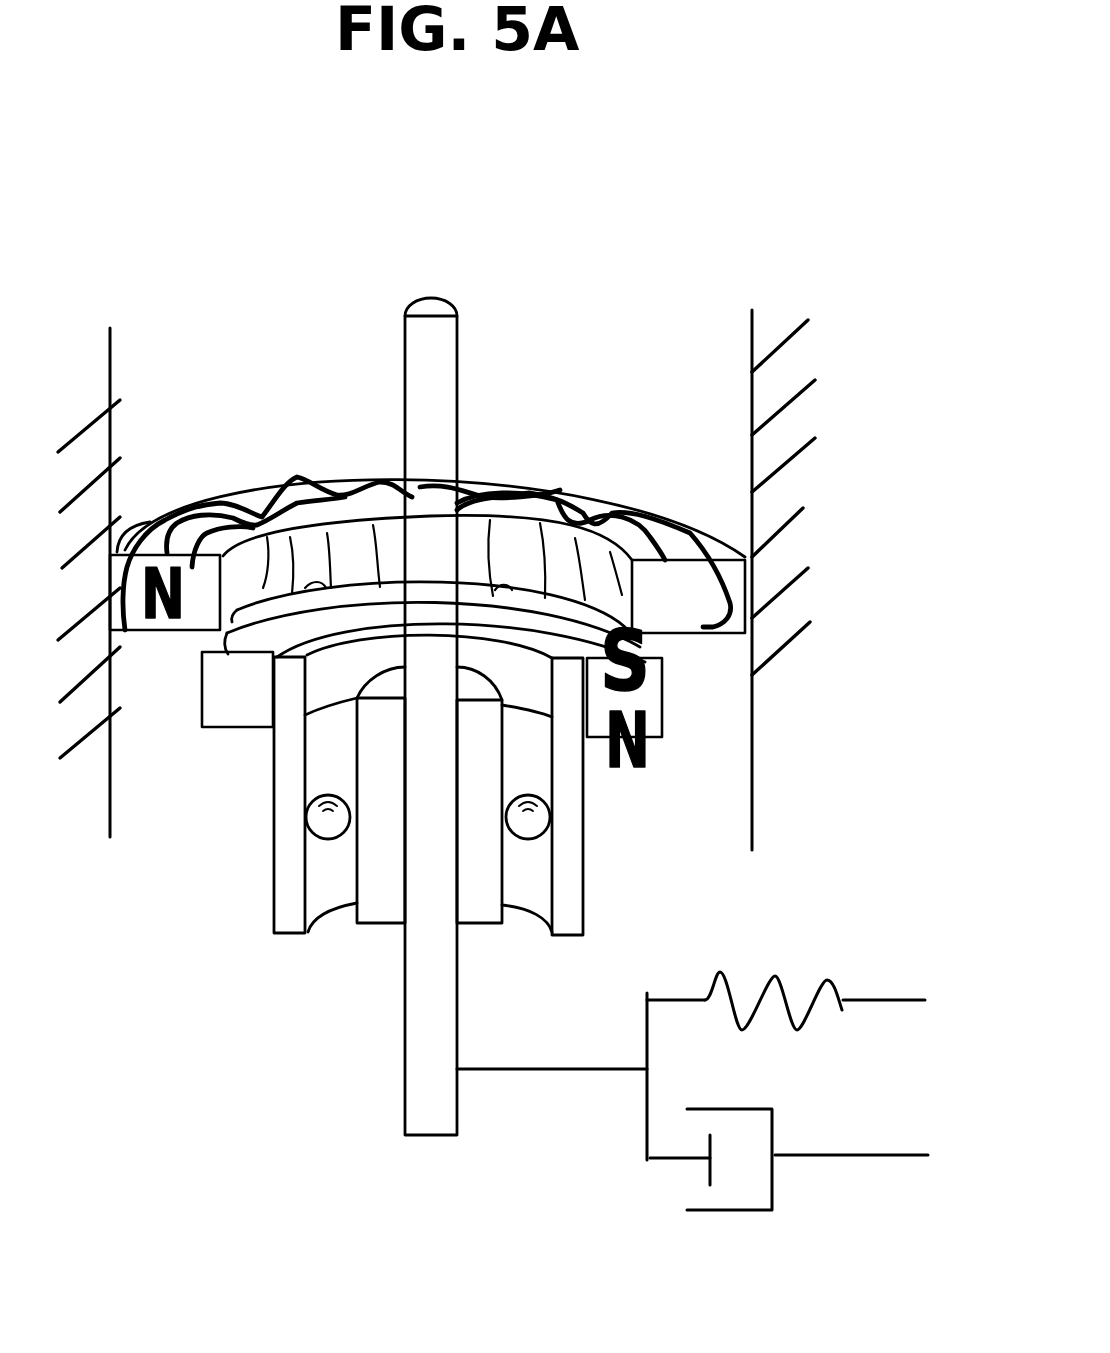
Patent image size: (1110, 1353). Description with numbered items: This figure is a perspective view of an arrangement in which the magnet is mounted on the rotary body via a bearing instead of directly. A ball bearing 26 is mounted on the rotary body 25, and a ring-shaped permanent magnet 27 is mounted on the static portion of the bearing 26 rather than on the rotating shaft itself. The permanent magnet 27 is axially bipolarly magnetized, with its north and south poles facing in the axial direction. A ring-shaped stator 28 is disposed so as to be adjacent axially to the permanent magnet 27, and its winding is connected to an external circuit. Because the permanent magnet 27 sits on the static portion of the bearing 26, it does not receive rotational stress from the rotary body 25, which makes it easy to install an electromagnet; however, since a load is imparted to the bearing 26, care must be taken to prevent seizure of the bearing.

The rotary body 25 is at (458, 357).
The ball bearing 26 is at (336, 937).
The ring-shaped permanent magnet 27 is at (210, 705).
The ring-shaped stator 28 is at (727, 575).